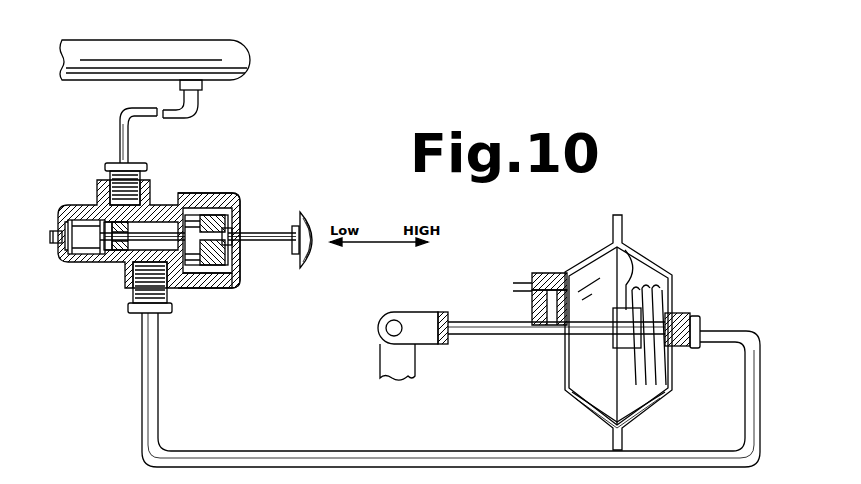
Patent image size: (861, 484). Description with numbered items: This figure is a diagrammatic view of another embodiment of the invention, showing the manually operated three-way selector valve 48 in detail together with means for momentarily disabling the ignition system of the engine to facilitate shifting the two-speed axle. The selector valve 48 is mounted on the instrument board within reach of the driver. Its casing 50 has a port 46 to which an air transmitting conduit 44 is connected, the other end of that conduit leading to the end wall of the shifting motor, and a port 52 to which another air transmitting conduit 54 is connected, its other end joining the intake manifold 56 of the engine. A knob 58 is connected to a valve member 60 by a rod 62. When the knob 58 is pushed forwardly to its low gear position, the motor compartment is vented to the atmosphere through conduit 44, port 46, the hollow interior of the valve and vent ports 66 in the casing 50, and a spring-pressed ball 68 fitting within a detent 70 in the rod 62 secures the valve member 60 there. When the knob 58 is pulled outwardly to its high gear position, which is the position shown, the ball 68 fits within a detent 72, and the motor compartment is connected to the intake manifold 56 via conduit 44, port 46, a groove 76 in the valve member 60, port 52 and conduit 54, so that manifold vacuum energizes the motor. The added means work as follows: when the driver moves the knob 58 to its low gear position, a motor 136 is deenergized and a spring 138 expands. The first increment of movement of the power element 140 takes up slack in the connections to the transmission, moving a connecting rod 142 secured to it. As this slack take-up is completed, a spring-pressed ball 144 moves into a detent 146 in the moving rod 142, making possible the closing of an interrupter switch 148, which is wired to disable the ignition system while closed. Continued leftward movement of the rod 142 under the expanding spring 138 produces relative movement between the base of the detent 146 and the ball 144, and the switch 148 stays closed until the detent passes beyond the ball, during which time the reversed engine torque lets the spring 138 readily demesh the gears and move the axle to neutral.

The air transmitting conduit 44 is at (270, 455).
The port 46 is at (123, 298).
The three-way selector valve 48 is at (60, 207).
The casing 50 is at (75, 265).
The port 52 is at (147, 180).
The air transmitting conduit 54 is at (203, 107).
The intake manifold 56 is at (230, 60).
The knob 58 is at (318, 235).
The valve member 60 is at (108, 228).
The rod 62 is at (304, 225).
The vent ports 66 is at (195, 212).
The spring-pressed ball 68 is at (228, 236).
The detent 70 is at (272, 240).
The detent 72 is at (240, 268).
The groove 76 is at (120, 268).
The motor 136 is at (648, 258).
The spring 138 is at (660, 300).
The power element 140 is at (655, 410).
The connecting rod 142 is at (487, 336).
The spring-pressed ball 144 is at (548, 322).
The detent 146 is at (567, 332).
The interrupter switch 148 is at (550, 270).